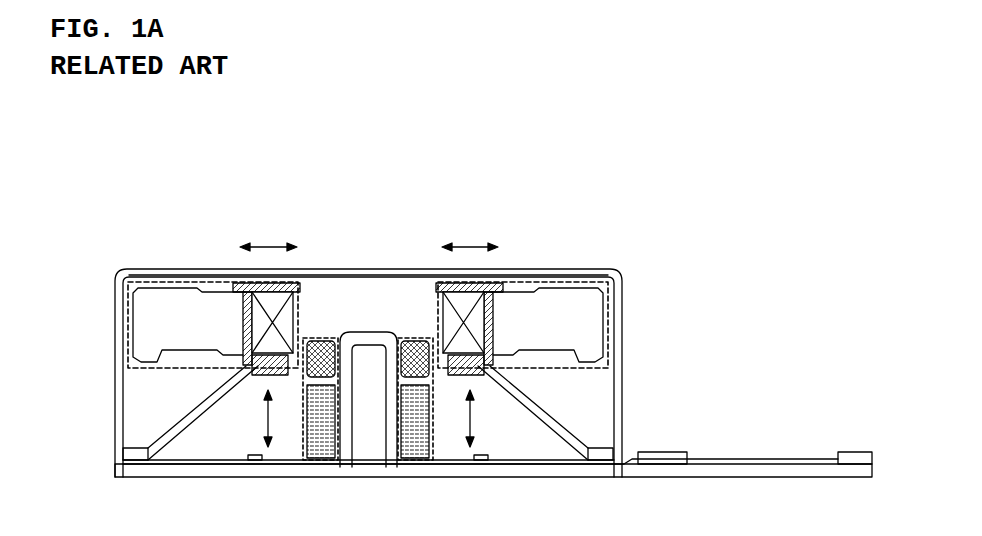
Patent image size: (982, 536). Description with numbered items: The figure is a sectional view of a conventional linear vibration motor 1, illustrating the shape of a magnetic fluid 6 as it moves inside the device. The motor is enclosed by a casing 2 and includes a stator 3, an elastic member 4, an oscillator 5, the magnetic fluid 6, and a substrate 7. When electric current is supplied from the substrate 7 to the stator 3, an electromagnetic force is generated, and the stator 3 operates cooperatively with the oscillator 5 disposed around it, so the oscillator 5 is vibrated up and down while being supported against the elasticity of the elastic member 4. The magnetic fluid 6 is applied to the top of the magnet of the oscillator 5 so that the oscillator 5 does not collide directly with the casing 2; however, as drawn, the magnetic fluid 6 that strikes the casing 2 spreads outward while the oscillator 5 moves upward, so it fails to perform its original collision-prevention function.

The linear vibration motor 1 is at (487, 143).
The casing 2 is at (370, 270).
The stator 3 is at (322, 466).
The elastic member 4 is at (197, 403).
The oscillator 5 is at (128, 322).
The magnetic fluid 6 is at (250, 282).
The substrate 7 is at (532, 476).